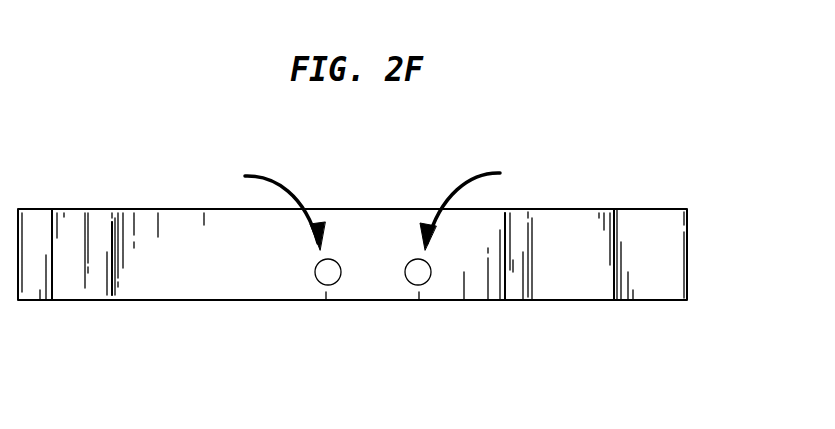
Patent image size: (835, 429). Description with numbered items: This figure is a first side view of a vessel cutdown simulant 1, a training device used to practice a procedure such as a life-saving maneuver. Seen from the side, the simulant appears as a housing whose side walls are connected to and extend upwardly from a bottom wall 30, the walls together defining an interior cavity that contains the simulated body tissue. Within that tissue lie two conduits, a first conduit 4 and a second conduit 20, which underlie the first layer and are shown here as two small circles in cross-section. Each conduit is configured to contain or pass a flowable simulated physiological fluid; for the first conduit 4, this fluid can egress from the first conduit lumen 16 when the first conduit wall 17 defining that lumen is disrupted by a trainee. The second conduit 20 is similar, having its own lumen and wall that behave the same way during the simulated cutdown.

The vessel cutdown simulant 1 is at (629, 118).
The bottom wall 30 is at (122, 300).
The first conduit lumen 16 is at (332, 273).
The first conduit wall 17 is at (315, 272).
The second conduit 20 is at (272, 205).
The first conduit 4 is at (467, 205).